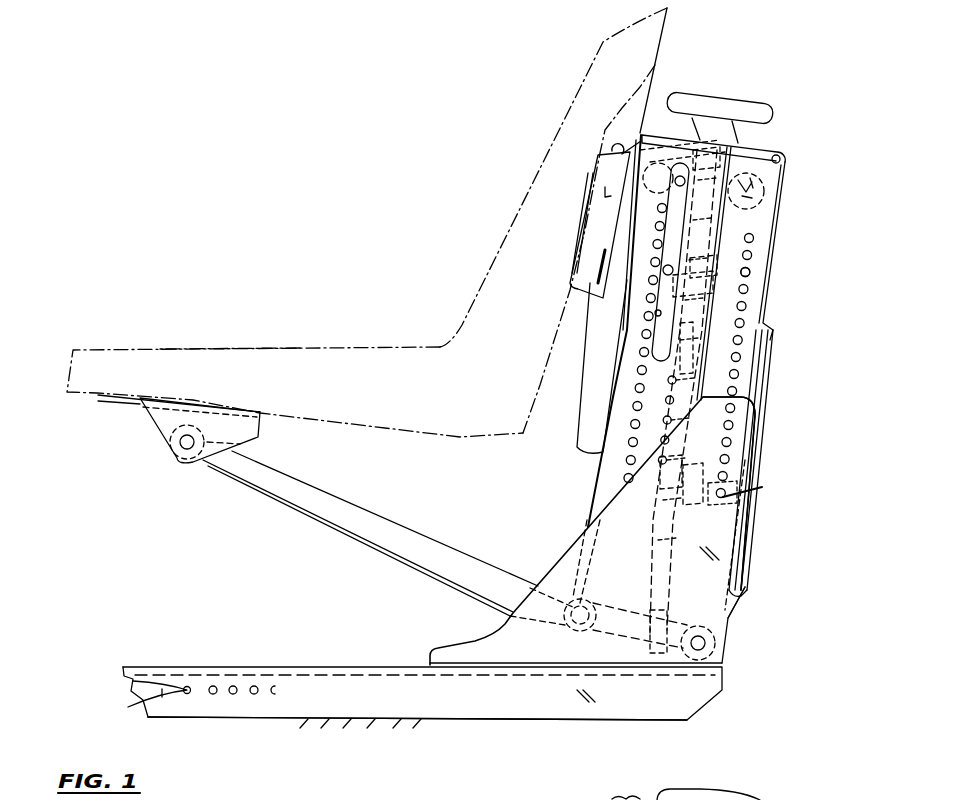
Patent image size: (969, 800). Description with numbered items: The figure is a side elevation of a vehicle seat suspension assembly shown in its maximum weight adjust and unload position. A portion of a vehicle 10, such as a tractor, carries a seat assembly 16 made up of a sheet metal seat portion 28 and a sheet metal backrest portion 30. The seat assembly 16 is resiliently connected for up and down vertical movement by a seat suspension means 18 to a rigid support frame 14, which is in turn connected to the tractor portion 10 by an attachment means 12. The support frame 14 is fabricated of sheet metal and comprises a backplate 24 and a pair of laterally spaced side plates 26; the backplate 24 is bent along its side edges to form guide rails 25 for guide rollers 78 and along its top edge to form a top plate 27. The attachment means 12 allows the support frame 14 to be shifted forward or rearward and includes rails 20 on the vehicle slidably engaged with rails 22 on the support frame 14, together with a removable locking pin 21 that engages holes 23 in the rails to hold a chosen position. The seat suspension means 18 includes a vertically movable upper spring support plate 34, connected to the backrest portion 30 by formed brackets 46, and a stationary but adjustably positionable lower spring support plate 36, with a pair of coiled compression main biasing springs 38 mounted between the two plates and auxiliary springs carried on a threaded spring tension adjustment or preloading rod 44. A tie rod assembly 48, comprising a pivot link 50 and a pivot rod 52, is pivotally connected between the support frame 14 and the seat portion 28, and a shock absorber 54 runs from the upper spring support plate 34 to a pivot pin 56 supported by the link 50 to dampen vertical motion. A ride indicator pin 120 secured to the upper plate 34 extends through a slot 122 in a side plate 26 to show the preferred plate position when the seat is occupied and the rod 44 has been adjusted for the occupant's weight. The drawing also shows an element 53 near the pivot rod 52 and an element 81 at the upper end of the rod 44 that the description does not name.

The vehicle portion 10 is at (381, 722).
The attachment means 12 is at (241, 722).
The support frame 14 is at (753, 553).
The seat assembly 16 is at (486, 296).
The seat suspension means 18 is at (788, 242).
The rails 20 is at (152, 667).
The locking pin 21 is at (143, 697).
The rails 22 is at (245, 667).
The holes 23 is at (157, 684).
The backplate 24 is at (757, 508).
The guide rails 25 is at (760, 298).
The side plates 26 is at (495, 659).
The top plate 27 is at (781, 148).
The seat portion 28 is at (217, 348).
The backrest portion 30 is at (567, 137).
The upper spring support plate 34 is at (770, 180).
The lower spring support plate 36 is at (762, 487).
The main biasing springs 38 is at (752, 270).
The spring tension adjustment rod 44 is at (658, 553).
The brackets 46 is at (588, 218).
The tie rod assembly 48 is at (378, 507).
The pivot link 50 is at (614, 600).
The pivot rod 52 is at (705, 643).
The stop 53 is at (736, 620).
The shock absorber 54 is at (570, 449).
The pivot pin 56 is at (572, 627).
The guide rollers 78 is at (771, 210).
The handle 81 is at (775, 108).
The ride indicator pin 120 is at (663, 271).
The slot 122 is at (655, 314).